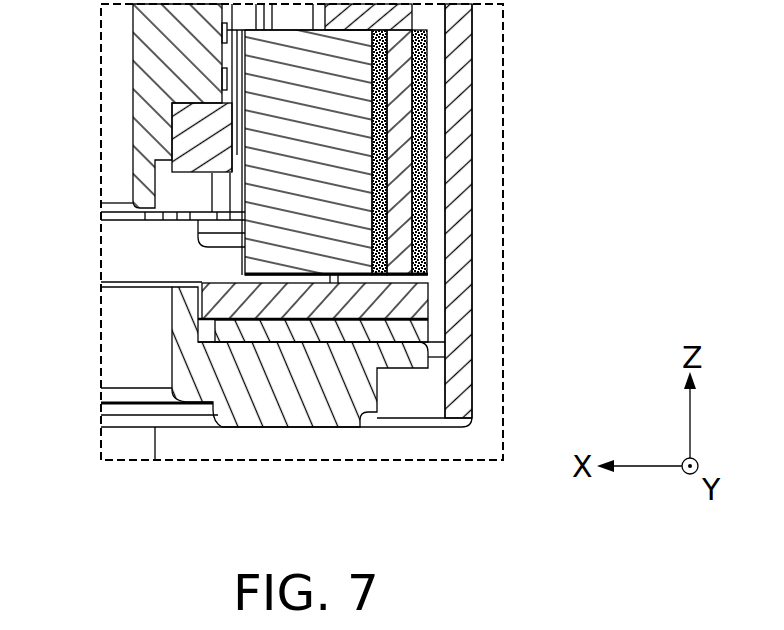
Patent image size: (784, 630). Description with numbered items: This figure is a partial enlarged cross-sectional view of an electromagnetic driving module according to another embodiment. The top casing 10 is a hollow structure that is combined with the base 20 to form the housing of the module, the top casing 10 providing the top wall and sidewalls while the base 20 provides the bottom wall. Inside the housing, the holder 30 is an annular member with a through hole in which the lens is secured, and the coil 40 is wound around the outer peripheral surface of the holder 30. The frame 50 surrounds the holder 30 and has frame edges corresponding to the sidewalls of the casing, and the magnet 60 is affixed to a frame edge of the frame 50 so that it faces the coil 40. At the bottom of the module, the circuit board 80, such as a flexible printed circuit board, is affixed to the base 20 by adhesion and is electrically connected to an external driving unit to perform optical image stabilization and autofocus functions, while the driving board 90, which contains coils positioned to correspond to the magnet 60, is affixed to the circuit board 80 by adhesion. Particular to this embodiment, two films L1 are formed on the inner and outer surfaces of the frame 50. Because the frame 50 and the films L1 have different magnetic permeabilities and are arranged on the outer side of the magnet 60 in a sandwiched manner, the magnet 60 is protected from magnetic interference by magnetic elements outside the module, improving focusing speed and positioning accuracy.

The top casing 10 is at (465, 253).
The base 20 is at (247, 412).
The holder 30 is at (145, 57).
The coil 40 is at (177, 137).
The frame 50 is at (405, 82).
The magnet 60 is at (360, 190).
The circuit board 80 is at (293, 332).
The driving board 90 is at (338, 302).
The films L1 is at (382, 140).